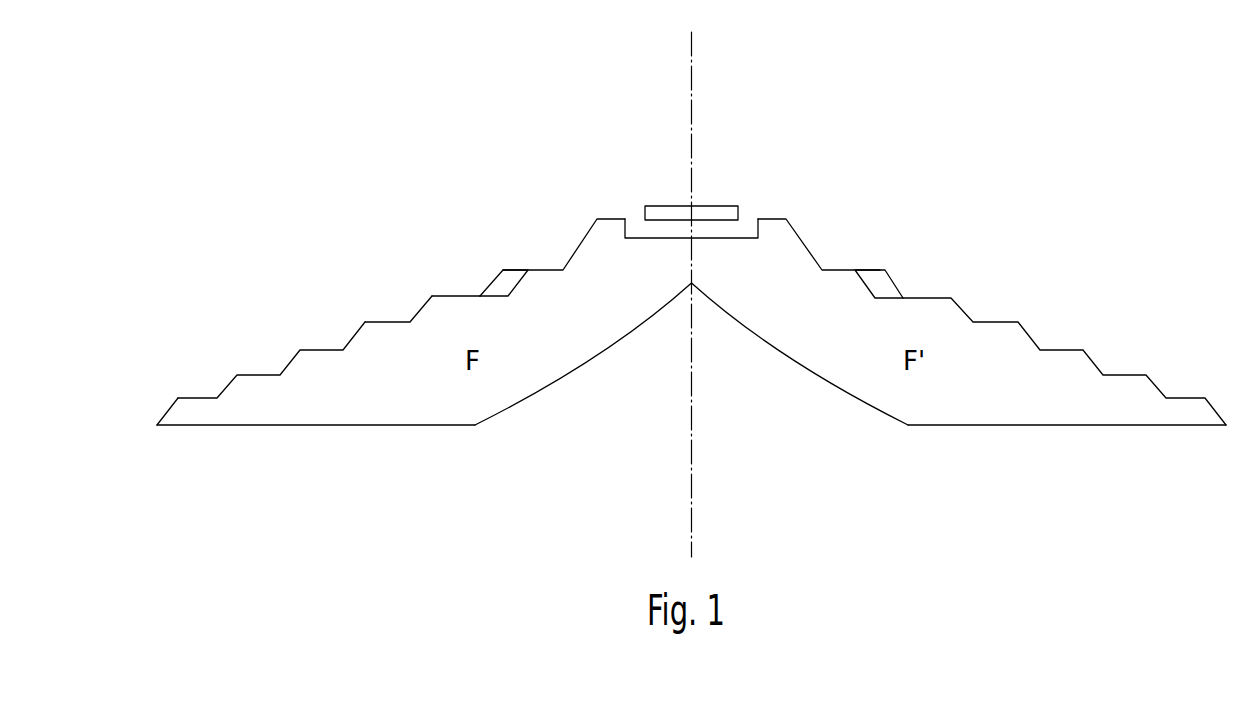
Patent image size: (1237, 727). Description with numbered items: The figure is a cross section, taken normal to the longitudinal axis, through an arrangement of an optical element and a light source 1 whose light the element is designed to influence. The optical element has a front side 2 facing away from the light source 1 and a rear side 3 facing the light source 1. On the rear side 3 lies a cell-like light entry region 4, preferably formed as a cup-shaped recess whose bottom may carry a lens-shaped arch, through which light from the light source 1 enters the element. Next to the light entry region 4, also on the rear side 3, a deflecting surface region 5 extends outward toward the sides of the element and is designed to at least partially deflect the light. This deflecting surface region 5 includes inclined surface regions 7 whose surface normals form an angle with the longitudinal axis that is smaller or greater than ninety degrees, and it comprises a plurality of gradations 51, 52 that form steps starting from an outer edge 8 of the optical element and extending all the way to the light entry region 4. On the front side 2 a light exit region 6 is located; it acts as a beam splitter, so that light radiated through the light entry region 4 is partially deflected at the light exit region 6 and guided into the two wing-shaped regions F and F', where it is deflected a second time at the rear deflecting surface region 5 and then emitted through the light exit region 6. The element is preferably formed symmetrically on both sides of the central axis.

The light source 1 is at (712, 210).
The front side 2 is at (545, 497).
The rear side 3 is at (525, 104).
The light entry region 4 is at (745, 227).
The deflecting surface region 5 is at (350, 338).
The gradation 51 is at (470, 288).
The gradation 52 is at (397, 313).
The light exit region 6 is at (573, 375).
The inclined surface region 7 is at (507, 276).
The outer edge 8 is at (157, 425).